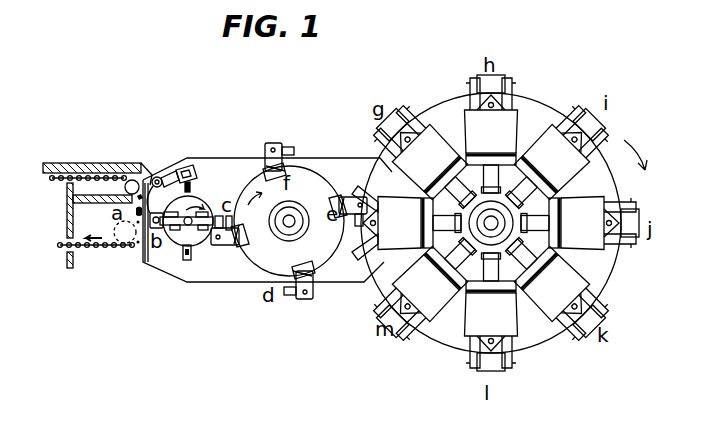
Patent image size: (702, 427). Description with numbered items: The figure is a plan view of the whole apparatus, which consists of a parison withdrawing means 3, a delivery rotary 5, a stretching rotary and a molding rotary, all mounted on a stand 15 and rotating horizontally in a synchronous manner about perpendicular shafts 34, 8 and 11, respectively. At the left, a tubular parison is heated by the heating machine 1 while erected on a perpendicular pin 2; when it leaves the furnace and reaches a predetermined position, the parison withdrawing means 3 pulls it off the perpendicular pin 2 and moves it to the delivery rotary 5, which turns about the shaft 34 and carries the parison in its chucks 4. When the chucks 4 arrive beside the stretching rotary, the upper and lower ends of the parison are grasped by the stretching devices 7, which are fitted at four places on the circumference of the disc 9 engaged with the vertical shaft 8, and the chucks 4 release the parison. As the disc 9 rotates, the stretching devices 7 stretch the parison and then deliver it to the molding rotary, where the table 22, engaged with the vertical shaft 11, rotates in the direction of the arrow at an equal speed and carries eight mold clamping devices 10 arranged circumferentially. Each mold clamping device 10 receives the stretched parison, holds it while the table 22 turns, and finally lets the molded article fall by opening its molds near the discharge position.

The heating machine 1 is at (65, 163).
The perpendicular pin 2 is at (137, 260).
The parison withdrawing means 3 is at (156, 170).
The chucks 4 is at (168, 247).
The transfer drum 5 is at (185, 246).
The stretching devices 7 is at (228, 250).
The perpendicular shaft 8 is at (285, 224).
The disc 9 is at (320, 255).
The mold clamping devices 10 is at (440, 302).
The perpendicular shaft 11 is at (580, 223).
The stand 15 is at (233, 158).
The table 22 is at (538, 343).
The shaft 34 is at (200, 246).